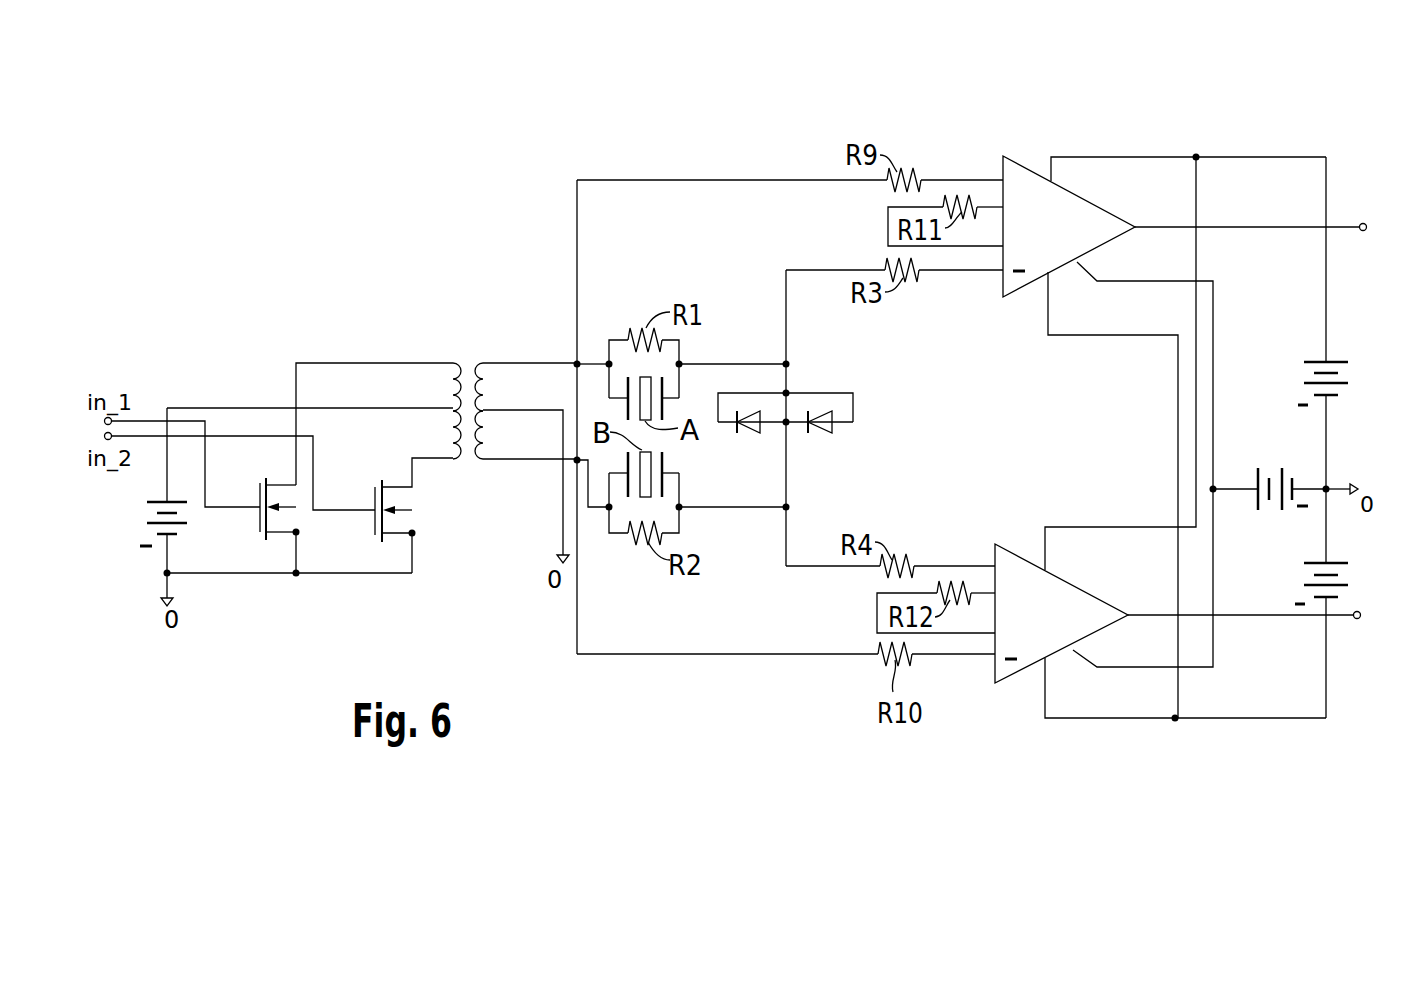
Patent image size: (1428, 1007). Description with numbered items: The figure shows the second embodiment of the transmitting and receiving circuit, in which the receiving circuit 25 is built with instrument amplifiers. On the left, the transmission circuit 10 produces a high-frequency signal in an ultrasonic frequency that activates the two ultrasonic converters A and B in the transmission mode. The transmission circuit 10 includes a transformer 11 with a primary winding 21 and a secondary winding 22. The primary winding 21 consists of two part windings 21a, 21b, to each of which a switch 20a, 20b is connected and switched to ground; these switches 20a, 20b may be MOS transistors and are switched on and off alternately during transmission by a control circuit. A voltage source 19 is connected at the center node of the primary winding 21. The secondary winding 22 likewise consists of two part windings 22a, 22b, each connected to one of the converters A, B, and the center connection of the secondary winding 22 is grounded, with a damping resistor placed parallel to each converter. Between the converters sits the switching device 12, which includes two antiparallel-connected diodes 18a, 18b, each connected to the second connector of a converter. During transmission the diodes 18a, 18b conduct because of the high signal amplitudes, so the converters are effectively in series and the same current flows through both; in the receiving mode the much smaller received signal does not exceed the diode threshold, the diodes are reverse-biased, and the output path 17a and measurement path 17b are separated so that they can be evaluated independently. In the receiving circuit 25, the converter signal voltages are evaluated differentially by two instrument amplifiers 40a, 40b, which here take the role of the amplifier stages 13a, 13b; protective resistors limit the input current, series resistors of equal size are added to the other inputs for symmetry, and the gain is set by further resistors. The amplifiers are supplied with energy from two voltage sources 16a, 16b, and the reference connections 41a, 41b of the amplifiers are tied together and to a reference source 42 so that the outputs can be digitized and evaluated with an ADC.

The transmission circuit 10 is at (304, 318).
The transformer 11 is at (466, 318).
The switching device 12 is at (862, 378).
The negative-feedback operational amplifier 13a is at (1224, 200).
The negative-feedback operational amplifier 13b is at (1208, 688).
The voltage source 16a is at (1345, 380).
The voltage source 16b is at (1345, 583).
The output path 17a is at (798, 262).
The measurement path 17b is at (768, 658).
The diode 18a is at (748, 430).
The diode 18b is at (835, 430).
The voltage source 19 is at (145, 521).
The switch 20a is at (261, 502).
The switch 20b is at (376, 502).
The primary winding 21 is at (452, 482).
The part winding 21a is at (453, 386).
The part winding 21b is at (453, 436).
The secondary winding 22 is at (493, 482).
The part winding 22a is at (494, 388).
The part winding 22b is at (494, 438).
The receiving circuit 25 is at (1009, 138).
The instrument amplifier 40a is at (1086, 216).
The instrument amplifier 40b is at (1078, 604).
The reference line of U3 41a is at (1152, 282).
The negative supply line of U4 41b is at (1145, 676).
The ADC reference voltage source 42 is at (1268, 510).